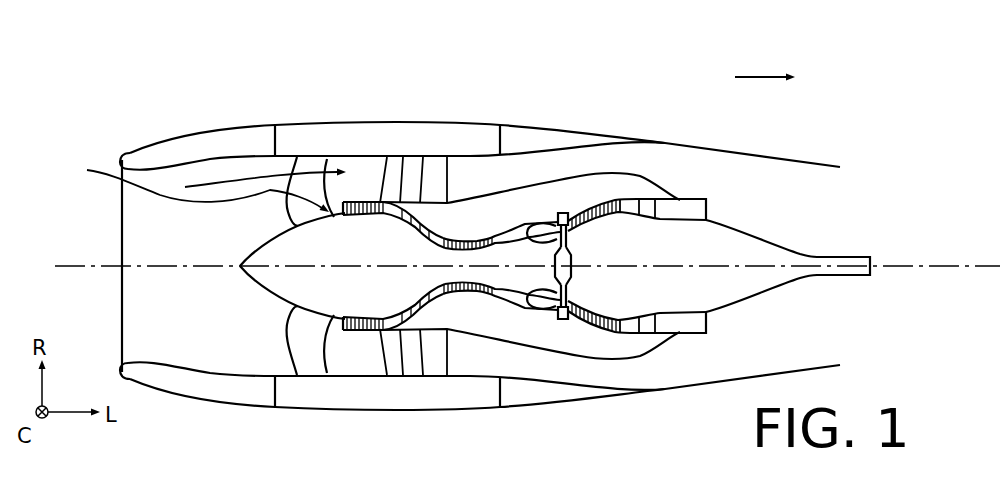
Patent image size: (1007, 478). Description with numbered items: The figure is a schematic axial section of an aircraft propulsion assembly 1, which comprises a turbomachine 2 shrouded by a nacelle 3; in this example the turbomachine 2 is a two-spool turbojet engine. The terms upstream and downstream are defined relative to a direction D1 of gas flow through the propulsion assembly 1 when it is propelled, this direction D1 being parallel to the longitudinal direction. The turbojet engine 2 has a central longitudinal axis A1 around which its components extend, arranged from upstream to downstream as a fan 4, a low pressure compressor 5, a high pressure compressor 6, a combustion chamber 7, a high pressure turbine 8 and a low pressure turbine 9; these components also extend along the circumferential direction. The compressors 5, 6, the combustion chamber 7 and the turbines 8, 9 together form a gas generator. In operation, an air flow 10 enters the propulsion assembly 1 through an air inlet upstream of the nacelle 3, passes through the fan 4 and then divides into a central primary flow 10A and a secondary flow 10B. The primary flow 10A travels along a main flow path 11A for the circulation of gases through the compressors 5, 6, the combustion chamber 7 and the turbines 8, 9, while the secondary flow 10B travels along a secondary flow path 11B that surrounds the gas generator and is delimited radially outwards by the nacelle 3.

The aircraft propulsion assembly 1 is at (450, 230).
The turbomachine 2 is at (727, 203).
The nacelle 3 is at (395, 135).
The fan 4 is at (302, 332).
The low pressure compressor 5 is at (364, 196).
The high pressure compressor 6 is at (480, 228).
The combustion chamber 7 is at (539, 214).
The high pressure turbine 8 is at (565, 210).
The low pressure turbine 9 is at (631, 190).
The air flow 10 is at (202, 183).
The central primary flow 10A is at (179, 185).
The secondary flow 10B is at (314, 172).
The main flow path 11A is at (432, 302).
The secondary flow path 11B is at (540, 365).
The central longitudinal axis A1 is at (66, 266).
The direction of gas flow D1 is at (760, 73).